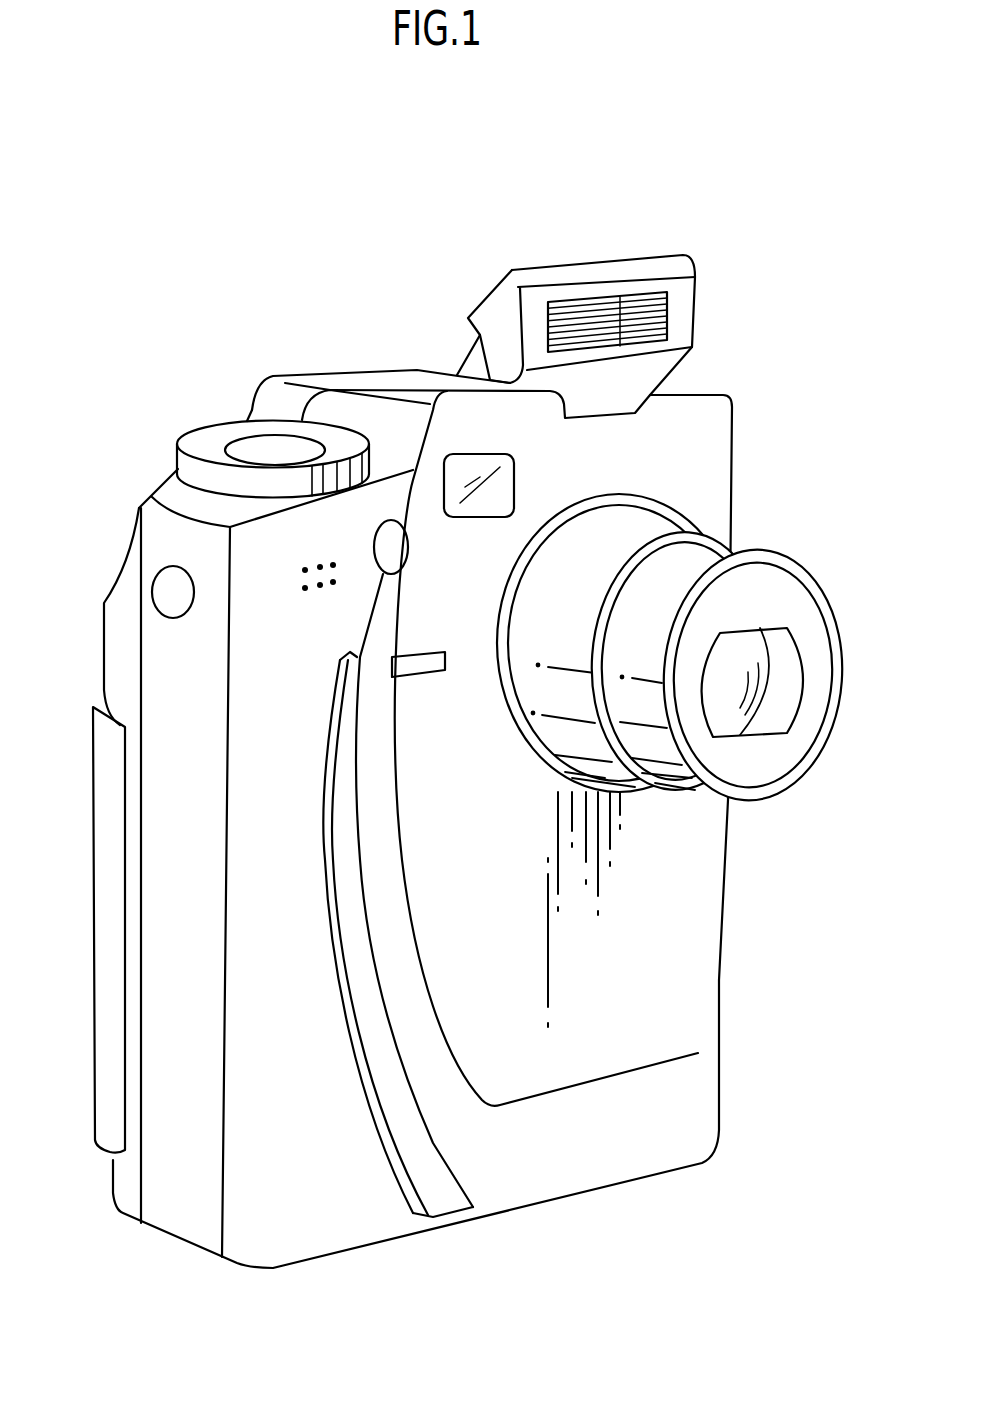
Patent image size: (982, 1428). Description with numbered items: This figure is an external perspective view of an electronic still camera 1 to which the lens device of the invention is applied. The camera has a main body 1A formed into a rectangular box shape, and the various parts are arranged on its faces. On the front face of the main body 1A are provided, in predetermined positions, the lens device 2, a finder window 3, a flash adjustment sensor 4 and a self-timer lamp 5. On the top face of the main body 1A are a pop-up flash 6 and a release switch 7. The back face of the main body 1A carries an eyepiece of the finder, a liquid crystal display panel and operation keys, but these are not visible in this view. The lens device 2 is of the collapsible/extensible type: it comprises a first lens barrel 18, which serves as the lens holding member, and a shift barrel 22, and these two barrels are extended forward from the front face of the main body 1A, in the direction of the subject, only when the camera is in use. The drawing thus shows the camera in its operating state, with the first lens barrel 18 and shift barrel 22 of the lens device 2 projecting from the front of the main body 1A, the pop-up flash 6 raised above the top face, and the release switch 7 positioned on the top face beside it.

The electronic still camera 1 is at (185, 297).
The main body 1A is at (688, 430).
The lens device 2 is at (698, 598).
The finder window 3 is at (473, 460).
The flash adjustment sensor 4 is at (398, 532).
The self-timer lamp 5 is at (413, 662).
The pop-up flash 6 is at (637, 263).
The release switch 7 is at (250, 453).
The first lens barrel 18 is at (660, 526).
The shift barrel 22 is at (825, 572).